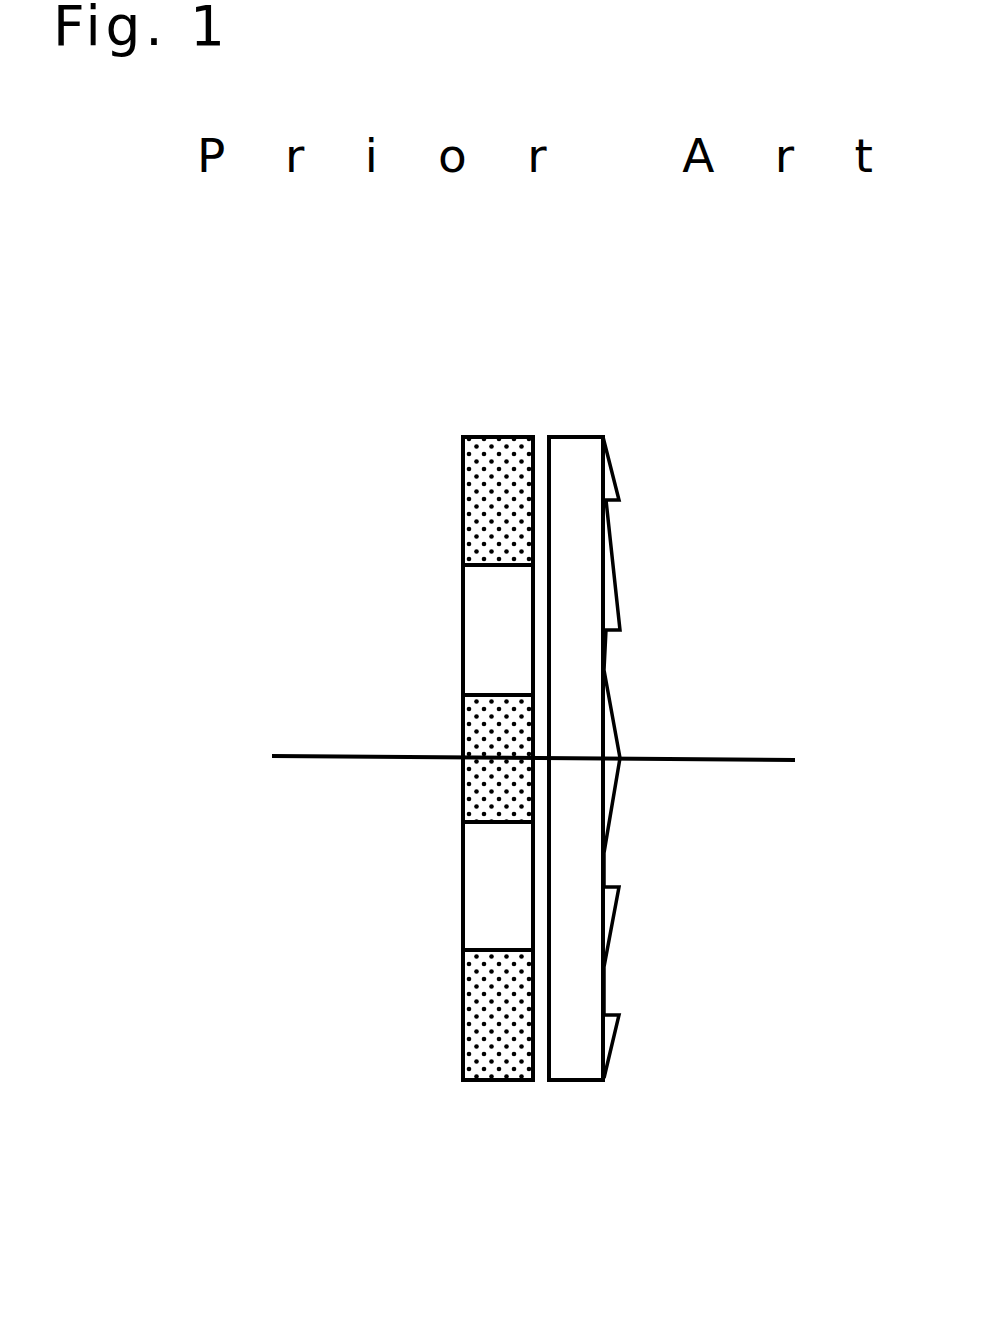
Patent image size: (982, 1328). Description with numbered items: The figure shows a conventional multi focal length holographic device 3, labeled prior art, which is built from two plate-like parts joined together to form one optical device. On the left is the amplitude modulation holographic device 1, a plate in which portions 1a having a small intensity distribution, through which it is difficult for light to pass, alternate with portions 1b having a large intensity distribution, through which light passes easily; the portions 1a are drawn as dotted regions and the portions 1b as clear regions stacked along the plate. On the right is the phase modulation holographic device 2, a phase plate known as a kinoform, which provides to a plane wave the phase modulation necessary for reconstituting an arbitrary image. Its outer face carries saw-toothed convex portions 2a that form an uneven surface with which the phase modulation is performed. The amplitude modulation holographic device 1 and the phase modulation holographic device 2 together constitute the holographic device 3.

The amplitude modulation holographic device 1 is at (482, 500).
The portions having a small intensity distribution 1a is at (518, 503).
The portions having a large intensity distribution 1b is at (518, 630).
The phase modulation holographic device 2 is at (585, 567).
The saw-toothed convex portions 2a is at (610, 620).
The holographic device 3 is at (530, 1145).